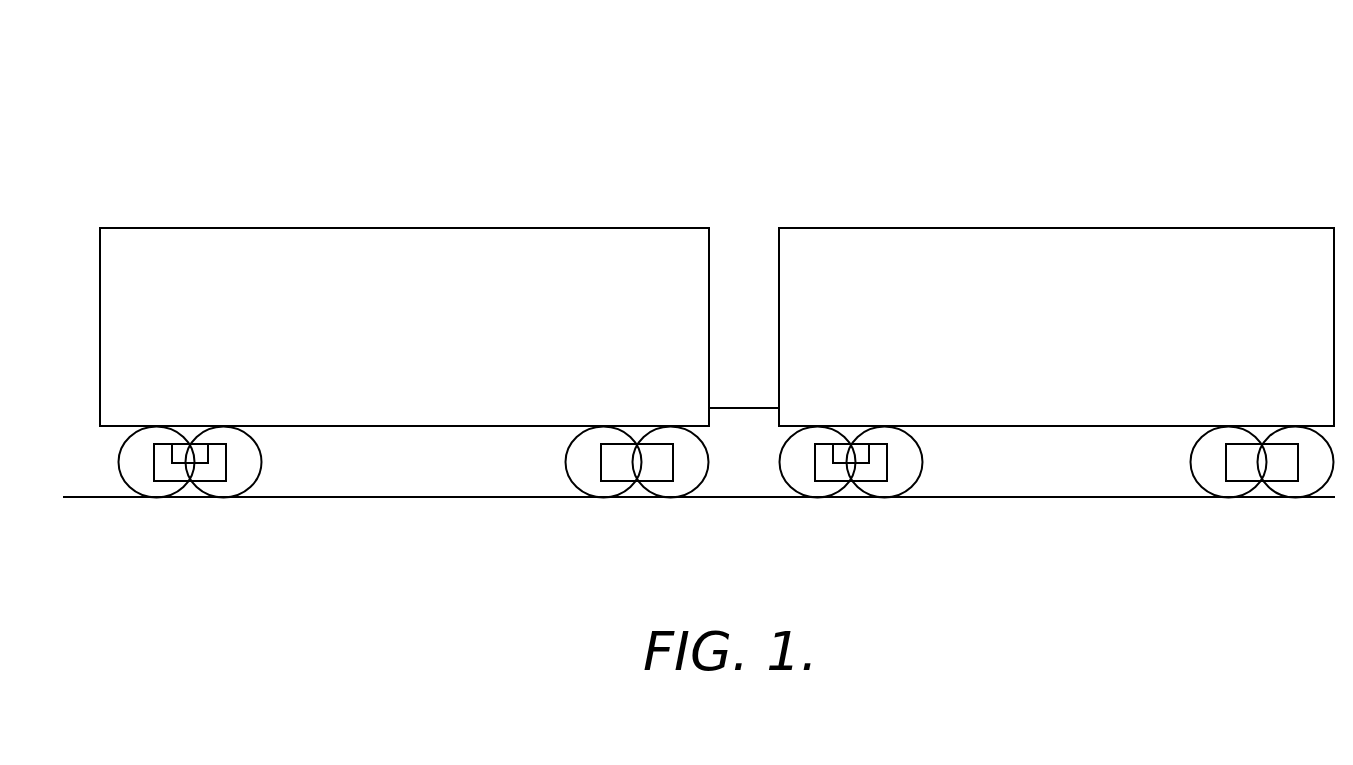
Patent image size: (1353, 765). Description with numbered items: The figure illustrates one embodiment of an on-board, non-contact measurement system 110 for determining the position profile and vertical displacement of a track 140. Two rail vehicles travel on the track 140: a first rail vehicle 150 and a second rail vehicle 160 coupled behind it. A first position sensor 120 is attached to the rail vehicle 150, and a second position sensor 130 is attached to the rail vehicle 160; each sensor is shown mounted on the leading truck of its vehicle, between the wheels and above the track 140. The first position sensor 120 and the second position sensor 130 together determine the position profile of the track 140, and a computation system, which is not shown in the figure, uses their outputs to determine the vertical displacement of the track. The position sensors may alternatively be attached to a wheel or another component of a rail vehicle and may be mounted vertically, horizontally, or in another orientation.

The on-board, non-contact measurement system 110 is at (905, 105).
The first position sensor 120 is at (190, 465).
The second position sensor 130 is at (852, 465).
The track 140 is at (489, 498).
The rail vehicle 150 is at (438, 228).
The rail vehicle 160 is at (1012, 228).